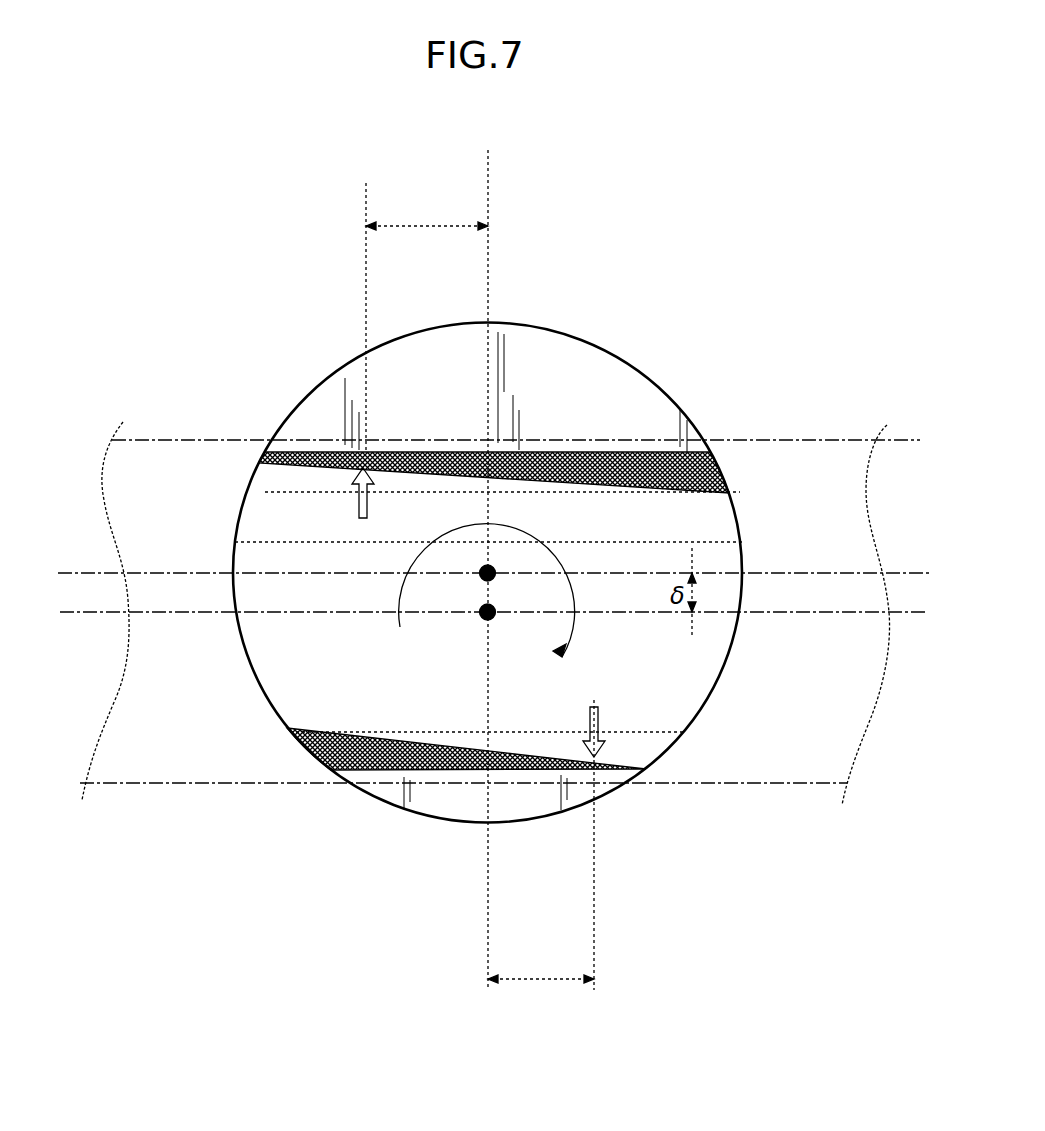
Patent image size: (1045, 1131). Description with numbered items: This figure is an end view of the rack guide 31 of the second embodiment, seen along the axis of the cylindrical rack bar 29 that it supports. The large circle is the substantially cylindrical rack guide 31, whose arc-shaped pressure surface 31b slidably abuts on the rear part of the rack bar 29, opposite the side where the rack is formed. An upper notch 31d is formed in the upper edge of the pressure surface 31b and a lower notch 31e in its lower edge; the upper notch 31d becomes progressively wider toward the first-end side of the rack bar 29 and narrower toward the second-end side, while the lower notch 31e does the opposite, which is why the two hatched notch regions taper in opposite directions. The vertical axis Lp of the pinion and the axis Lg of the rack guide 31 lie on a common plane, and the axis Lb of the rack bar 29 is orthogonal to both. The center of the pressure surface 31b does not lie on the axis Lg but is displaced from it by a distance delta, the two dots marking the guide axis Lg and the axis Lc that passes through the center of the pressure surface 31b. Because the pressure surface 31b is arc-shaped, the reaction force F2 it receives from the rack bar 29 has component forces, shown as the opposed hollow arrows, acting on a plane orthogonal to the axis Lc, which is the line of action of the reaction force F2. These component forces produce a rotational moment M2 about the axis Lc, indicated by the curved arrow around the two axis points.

The rack bar 29 is at (792, 440).
The rack guide 31 is at (648, 372).
The pressure surface 31b is at (702, 674).
The upper notch 31d is at (718, 462).
The lower notch 31e is at (313, 763).
The axis of the pinion Lp is at (490, 193).
The axis of the rack guide Lg is at (496, 581).
The axis passing through the center of the pressure surface Lc is at (481, 618).
The axis of the rack bar Lb is at (603, 612).
The rotational moment M2 is at (487, 600).
The reaction force F2 is at (478, 612).